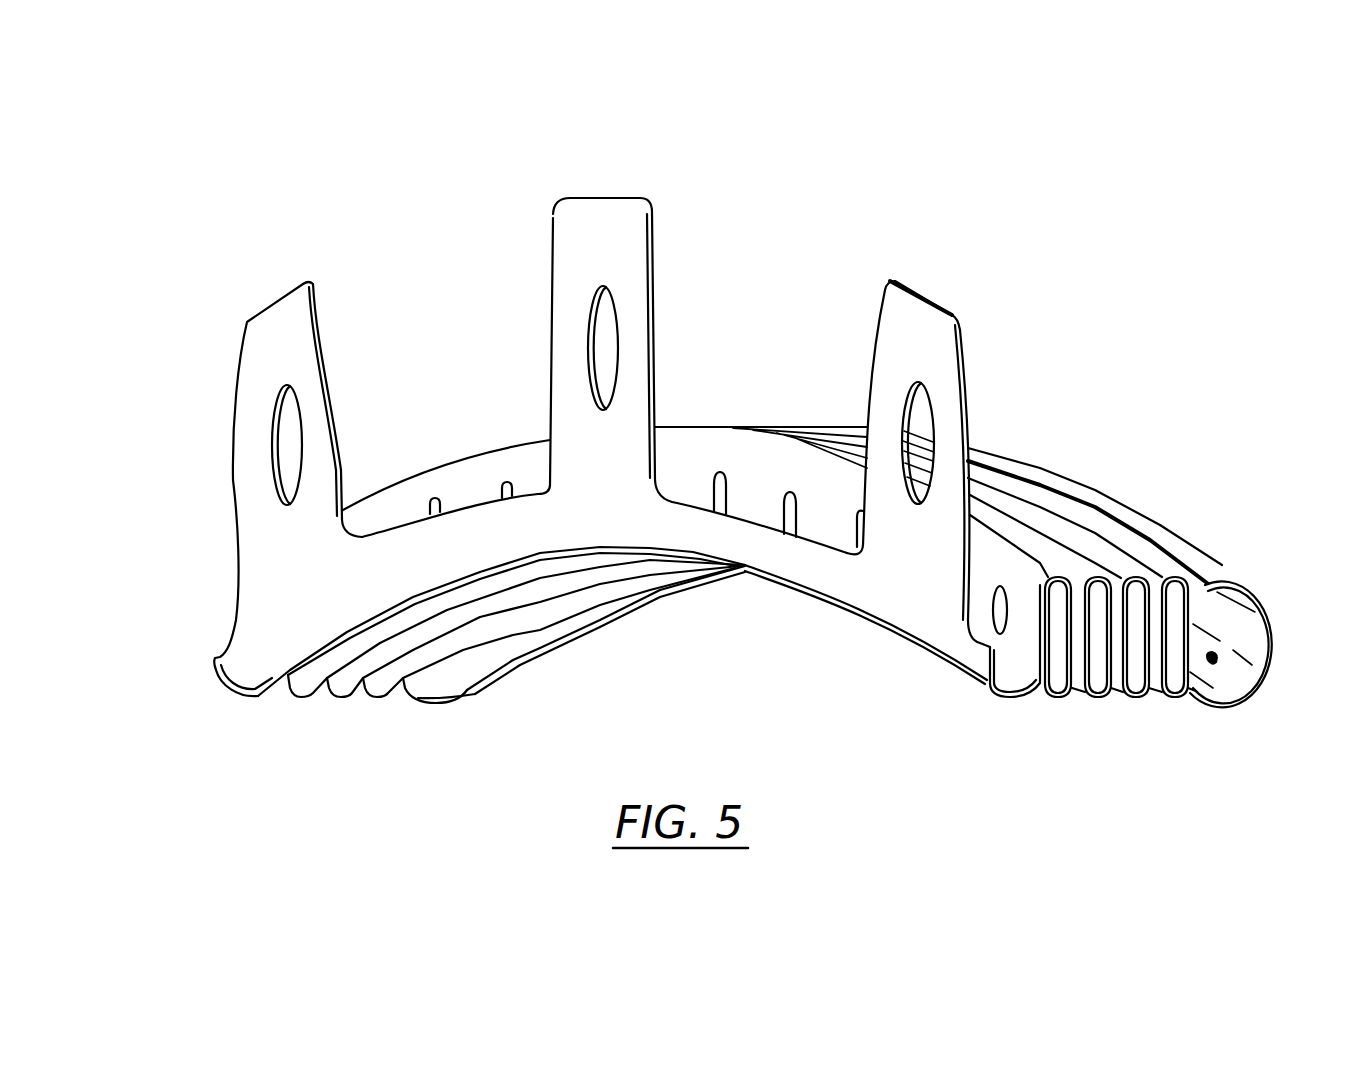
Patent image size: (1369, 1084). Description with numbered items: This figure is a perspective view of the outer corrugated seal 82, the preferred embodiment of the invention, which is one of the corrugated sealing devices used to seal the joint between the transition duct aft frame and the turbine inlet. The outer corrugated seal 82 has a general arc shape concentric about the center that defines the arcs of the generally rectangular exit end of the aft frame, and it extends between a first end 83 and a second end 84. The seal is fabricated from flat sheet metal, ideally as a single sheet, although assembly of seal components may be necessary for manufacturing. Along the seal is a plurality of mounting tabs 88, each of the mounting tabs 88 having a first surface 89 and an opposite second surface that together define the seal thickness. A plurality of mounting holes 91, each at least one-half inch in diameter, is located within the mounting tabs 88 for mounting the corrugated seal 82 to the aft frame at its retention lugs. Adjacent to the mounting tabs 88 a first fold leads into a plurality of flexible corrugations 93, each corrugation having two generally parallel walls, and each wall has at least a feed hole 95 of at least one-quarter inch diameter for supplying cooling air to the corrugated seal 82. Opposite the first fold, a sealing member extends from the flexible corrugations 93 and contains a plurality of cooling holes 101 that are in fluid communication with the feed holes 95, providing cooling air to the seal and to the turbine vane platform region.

The outer corrugated seal 82 is at (706, 479).
The first end 83 is at (1270, 674).
The second end 84 is at (188, 684).
The mounting tabs 88 is at (586, 443).
The first surface 89 is at (304, 350).
The mounting holes 91 is at (275, 440).
The flexible corrugations 93 is at (1185, 700).
The feed hole 95 is at (722, 485).
The cooling holes 101 is at (1214, 656).